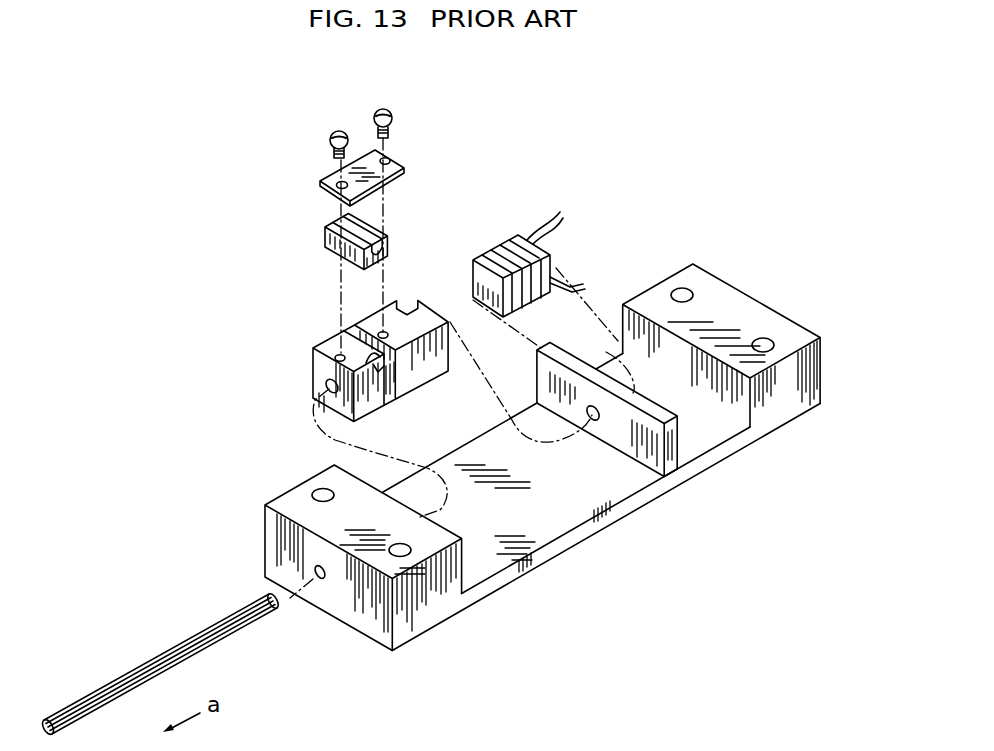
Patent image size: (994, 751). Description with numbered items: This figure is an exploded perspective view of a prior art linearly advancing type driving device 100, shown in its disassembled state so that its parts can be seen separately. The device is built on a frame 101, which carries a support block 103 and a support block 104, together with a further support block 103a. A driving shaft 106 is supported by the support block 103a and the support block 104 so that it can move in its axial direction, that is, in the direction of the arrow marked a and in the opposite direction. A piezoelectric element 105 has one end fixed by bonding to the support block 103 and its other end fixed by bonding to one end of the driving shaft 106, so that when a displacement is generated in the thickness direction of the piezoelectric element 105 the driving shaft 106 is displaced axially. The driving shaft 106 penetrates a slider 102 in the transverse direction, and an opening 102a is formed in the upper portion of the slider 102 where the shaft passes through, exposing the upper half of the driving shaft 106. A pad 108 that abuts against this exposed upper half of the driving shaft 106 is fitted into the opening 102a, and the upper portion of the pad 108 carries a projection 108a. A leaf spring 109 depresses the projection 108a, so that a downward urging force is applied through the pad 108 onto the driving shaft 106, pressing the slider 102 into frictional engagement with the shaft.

The linearly advancing type driving device 100 is at (653, 559).
The frame 101 is at (523, 570).
The slider 102 is at (312, 366).
The opening 102a is at (337, 353).
The support block 103 is at (785, 405).
The support block 103a is at (690, 463).
The support block 104 is at (370, 622).
The piezoelectric element 105 is at (480, 260).
The driving shaft 106 is at (153, 662).
The pad 108 is at (327, 232).
The projection 108a is at (383, 250).
The leaf spring 109 is at (404, 168).